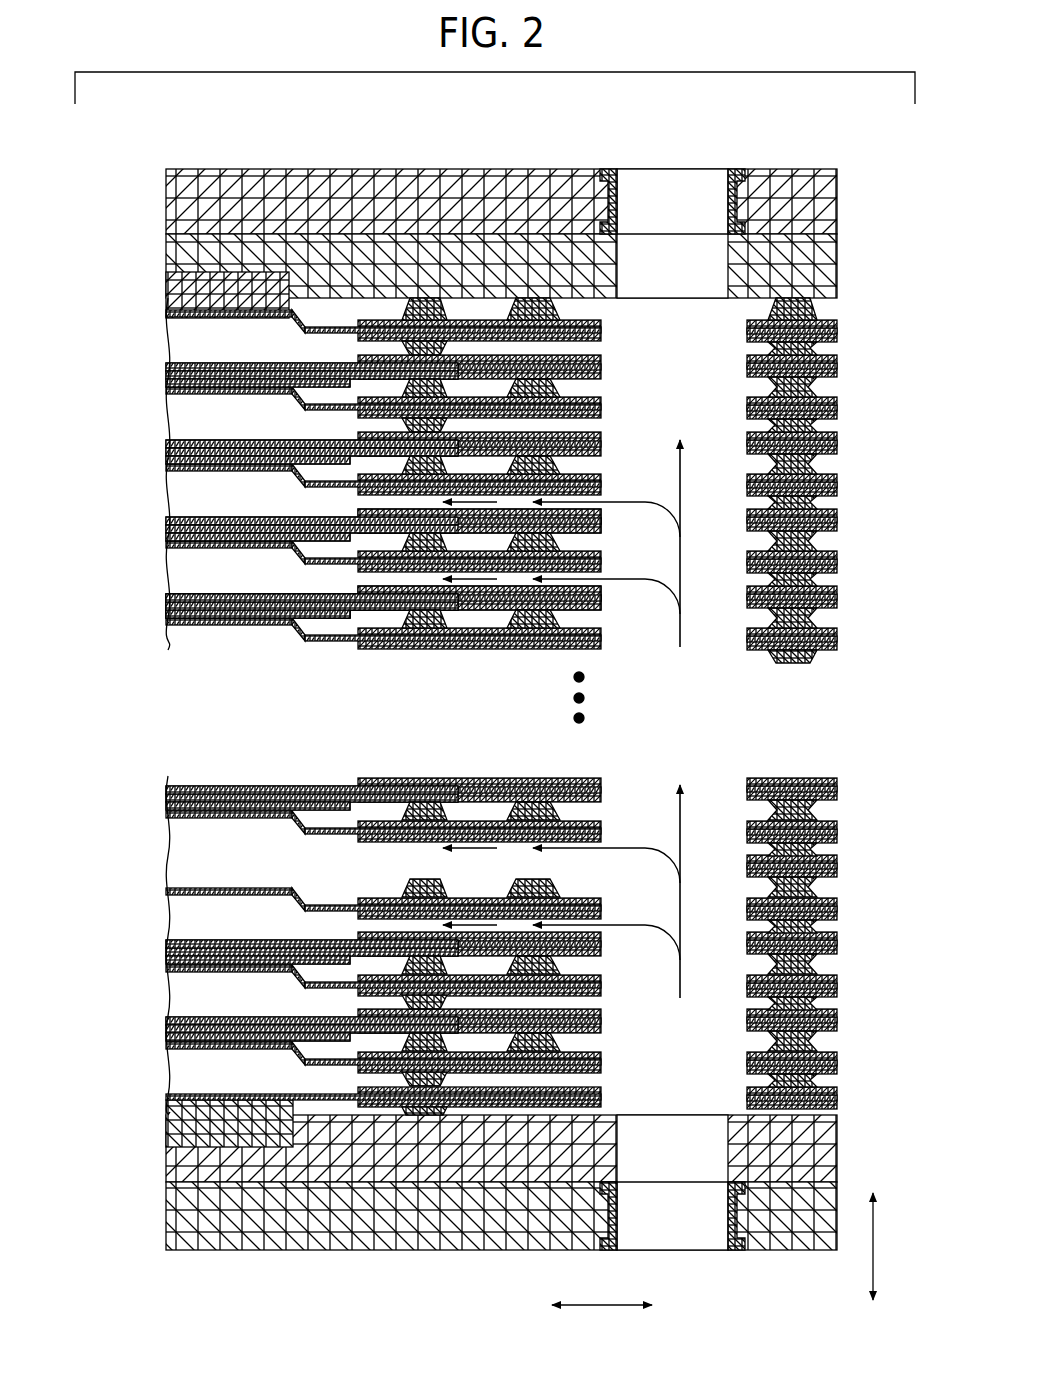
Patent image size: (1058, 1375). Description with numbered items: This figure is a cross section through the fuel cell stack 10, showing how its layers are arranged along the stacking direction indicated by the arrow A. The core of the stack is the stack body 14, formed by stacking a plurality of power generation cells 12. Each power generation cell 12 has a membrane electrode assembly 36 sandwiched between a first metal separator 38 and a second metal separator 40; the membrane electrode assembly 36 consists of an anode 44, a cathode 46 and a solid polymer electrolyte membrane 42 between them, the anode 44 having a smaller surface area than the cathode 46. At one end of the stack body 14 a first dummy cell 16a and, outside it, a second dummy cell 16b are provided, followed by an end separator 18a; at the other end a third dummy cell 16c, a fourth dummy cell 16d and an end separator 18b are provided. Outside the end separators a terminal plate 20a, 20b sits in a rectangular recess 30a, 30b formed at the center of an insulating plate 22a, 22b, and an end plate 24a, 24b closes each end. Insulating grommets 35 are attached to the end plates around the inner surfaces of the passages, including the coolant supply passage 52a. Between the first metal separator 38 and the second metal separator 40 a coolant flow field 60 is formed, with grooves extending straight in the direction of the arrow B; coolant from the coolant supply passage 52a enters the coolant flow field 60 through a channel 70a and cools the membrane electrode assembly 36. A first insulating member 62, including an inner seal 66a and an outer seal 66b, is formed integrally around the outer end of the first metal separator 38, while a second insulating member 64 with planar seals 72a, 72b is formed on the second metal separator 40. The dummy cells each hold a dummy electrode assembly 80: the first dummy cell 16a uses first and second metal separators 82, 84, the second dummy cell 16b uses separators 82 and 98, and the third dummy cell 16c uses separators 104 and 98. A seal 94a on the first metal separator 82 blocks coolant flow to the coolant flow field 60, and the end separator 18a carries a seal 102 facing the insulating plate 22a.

The fuel cell stack 10 is at (778, 128).
The power generation cell 12 is at (163, 527).
The stack body 14 is at (99, 605).
The first dummy cell 16a is at (99, 925).
The second dummy cell 16b is at (99, 1000).
The third dummy cell 16c is at (99, 422).
The fourth dummy cell 16d is at (99, 345).
The end separator 18a is at (192, 1103).
The end separator 18b is at (178, 297).
The terminal plate 20a is at (273, 1123).
The terminal plate 20b is at (272, 290).
The insulating plate 22a is at (185, 1155).
The insulating plate 22b is at (176, 250).
The end plate 24a is at (183, 1220).
The end plate 24b is at (178, 182).
The rectangular recess 30a is at (208, 1137).
The rectangular recess 30b is at (204, 278).
The insulating grommet 35 is at (727, 197).
The membrane electrode assembly 36 is at (195, 666).
The first metal separator 38 is at (187, 831).
The second metal separator 40 is at (178, 786).
The solid polymer electrolyte membrane 42 is at (238, 607).
The anode 44 is at (263, 599).
The cathode 46 is at (214, 617).
The coolant supply passage 52a is at (682, 1020).
The coolant flow field 60 is at (252, 425).
The first insulating member 62 is at (841, 643).
The second insulating member 64 is at (841, 597).
The inner seal 66a is at (440, 790).
The outer seal 66b is at (548, 800).
The channel 70a is at (583, 877).
The planar seal 72a is at (592, 607).
The planar seal 72b is at (592, 578).
The dummy electrode assembly 80 is at (163, 382).
The first metal separator 82 is at (187, 404).
The second metal separator 84 is at (181, 941).
The seal 94a is at (410, 1088).
The second metal separator 98 is at (183, 362).
The seal 102 is at (427, 1118).
The first metal separator 104 is at (187, 480).
The stacking direction A is at (885, 1246).
The coolant flow direction B is at (602, 1288).